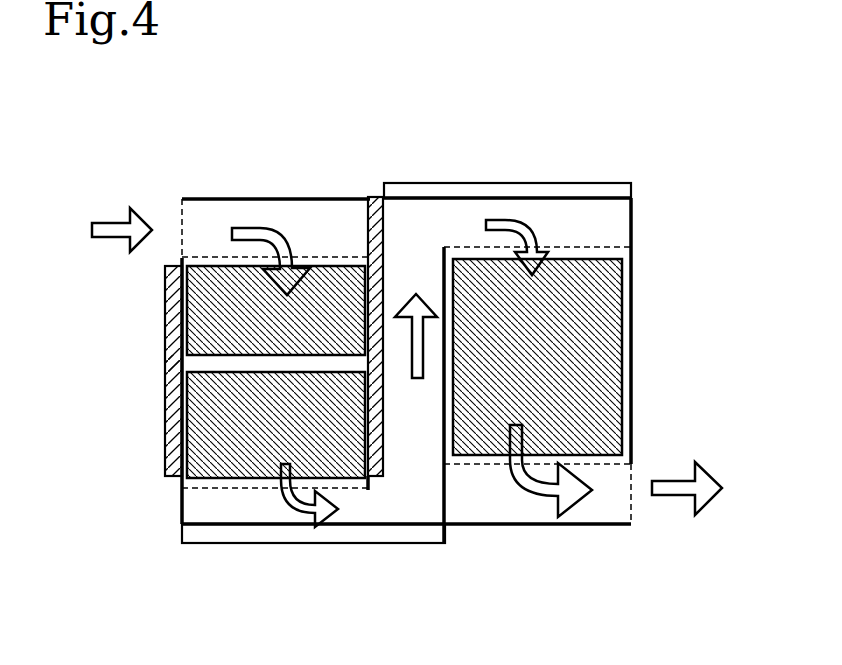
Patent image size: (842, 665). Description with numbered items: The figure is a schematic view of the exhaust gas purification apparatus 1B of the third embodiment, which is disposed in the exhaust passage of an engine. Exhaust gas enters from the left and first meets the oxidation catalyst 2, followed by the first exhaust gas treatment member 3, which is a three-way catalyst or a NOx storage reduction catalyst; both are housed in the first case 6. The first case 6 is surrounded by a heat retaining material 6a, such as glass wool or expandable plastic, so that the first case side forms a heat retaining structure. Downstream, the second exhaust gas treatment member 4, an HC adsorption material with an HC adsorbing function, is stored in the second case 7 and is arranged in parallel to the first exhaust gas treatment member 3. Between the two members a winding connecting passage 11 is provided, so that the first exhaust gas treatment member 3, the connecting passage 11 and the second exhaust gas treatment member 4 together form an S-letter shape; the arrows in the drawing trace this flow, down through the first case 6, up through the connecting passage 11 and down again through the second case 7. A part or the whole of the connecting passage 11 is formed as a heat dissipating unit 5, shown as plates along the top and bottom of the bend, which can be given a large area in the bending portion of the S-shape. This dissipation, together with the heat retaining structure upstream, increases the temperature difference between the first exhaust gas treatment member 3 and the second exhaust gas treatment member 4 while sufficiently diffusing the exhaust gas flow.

The exhaust gas purification apparatus 1B is at (537, 173).
The oxidation catalyst 2 is at (213, 298).
The first exhaust gas treatment member 3 is at (212, 425).
The second exhaust gas treatment member 4 is at (590, 367).
The heat dissipating unit 5 is at (445, 182).
The first case 6 is at (177, 390).
The heat retaining material 6a is at (173, 355).
The second case 7 is at (632, 423).
The connecting passage 11 is at (417, 478).